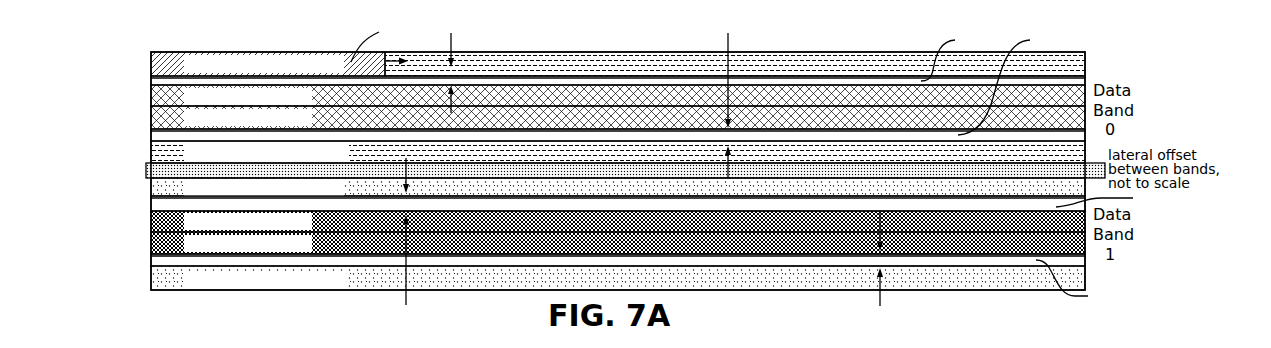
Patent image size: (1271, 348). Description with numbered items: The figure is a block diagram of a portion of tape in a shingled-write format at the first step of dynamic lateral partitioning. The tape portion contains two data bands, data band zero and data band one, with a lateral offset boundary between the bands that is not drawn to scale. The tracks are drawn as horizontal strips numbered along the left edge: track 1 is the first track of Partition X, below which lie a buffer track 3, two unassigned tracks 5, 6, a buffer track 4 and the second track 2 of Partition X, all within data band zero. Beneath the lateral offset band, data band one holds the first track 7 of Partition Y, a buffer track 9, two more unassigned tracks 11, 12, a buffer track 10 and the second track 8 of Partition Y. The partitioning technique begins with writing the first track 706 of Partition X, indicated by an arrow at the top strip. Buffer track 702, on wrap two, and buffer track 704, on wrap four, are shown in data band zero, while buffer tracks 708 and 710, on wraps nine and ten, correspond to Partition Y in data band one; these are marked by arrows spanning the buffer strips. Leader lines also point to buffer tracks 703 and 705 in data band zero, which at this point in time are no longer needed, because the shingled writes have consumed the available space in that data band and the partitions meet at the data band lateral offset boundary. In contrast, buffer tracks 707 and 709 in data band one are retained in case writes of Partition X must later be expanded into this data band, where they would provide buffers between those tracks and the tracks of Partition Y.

The partition X first track 1 is at (610, 64).
The partition X second track 2 is at (610, 153).
The buffer track 3 is at (605, 79).
The buffer track 4 is at (605, 138).
The unassigned track 5 is at (598, 96).
The unassigned track 6 is at (598, 117).
The partition Y first track 7 is at (610, 187).
The partition Y second track 8 is at (610, 279).
The buffer track 9 is at (605, 203).
The buffer track 10 is at (602, 263).
The unassigned track 11 is at (595, 221).
The unassigned track 12 is at (595, 243).
The buffer track 702 is at (443, 25).
The buffer track 703 is at (954, 56).
The buffer track 704 is at (720, 25).
The buffer track 705 is at (1011, 83).
The first track of Partition X 706 is at (380, 40).
The buffer track 707 is at (1110, 199).
The buffer track 708 is at (398, 297).
The buffer track 709 is at (1079, 284).
The buffer track 710 is at (872, 298).